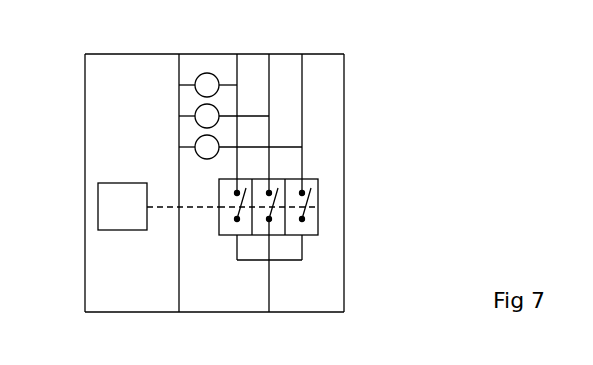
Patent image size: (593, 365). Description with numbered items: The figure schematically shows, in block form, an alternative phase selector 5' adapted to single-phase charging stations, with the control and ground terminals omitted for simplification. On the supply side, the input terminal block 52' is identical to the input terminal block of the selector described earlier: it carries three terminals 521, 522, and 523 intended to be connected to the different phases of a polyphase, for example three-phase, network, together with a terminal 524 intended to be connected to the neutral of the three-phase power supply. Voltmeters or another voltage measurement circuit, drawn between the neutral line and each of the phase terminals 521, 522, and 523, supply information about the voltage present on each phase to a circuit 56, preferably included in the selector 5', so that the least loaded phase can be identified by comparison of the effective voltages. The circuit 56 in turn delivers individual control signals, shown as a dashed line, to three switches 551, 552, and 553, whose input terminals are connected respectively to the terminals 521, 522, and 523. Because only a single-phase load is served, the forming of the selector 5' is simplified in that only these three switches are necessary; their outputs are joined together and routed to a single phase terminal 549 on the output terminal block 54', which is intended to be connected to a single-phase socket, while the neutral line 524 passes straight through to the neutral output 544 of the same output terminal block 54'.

The phase selector 5' is at (239, 183).
The input terminal block 52' is at (181, 34).
The output terminal block 54' is at (179, 332).
The circuit 56 is at (127, 183).
The terminal 521 is at (213, 113).
The terminal 522 is at (230, 113).
The terminal 523 is at (247, 113).
The terminal 524 is at (178, 116).
The neutral output conductor 544 is at (179, 269).
The single phase terminal 549 is at (269, 278).
The switch 551 is at (219, 221).
The switch 552 is at (279, 235).
The switch 553 is at (318, 198).